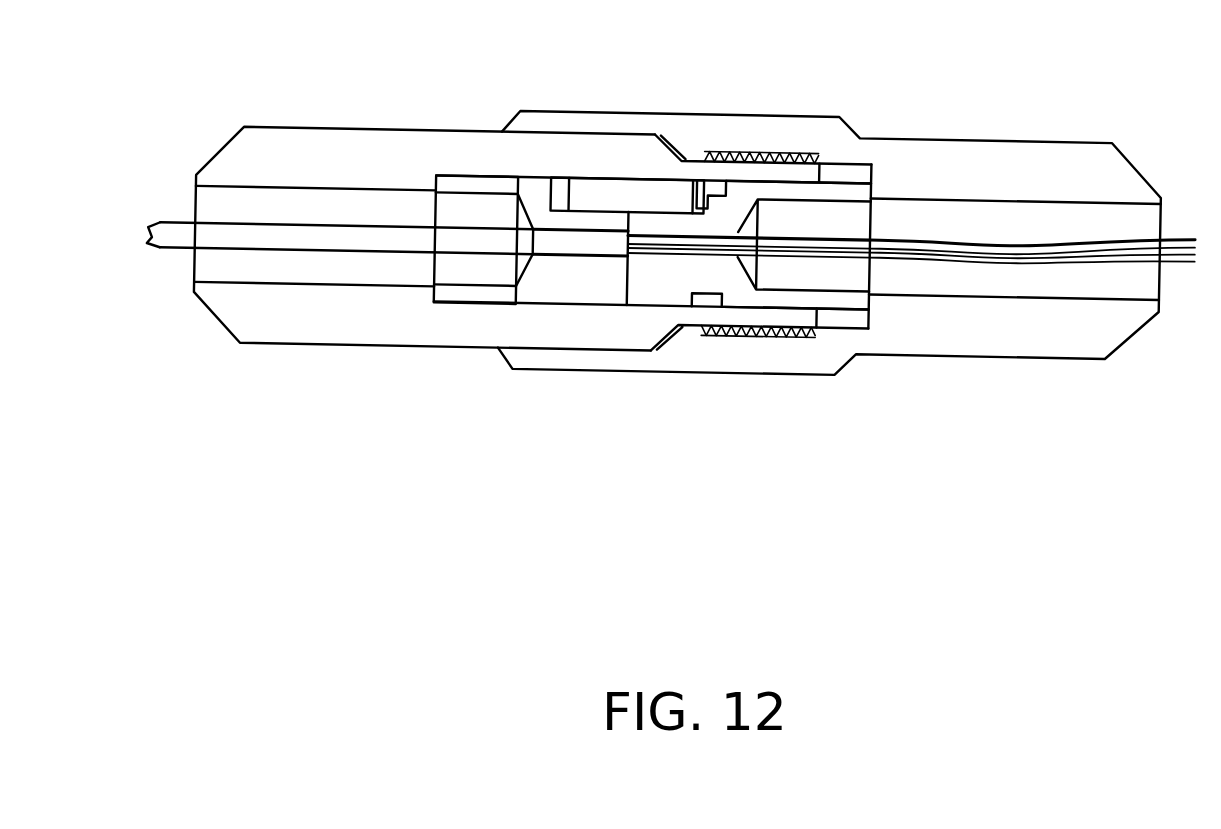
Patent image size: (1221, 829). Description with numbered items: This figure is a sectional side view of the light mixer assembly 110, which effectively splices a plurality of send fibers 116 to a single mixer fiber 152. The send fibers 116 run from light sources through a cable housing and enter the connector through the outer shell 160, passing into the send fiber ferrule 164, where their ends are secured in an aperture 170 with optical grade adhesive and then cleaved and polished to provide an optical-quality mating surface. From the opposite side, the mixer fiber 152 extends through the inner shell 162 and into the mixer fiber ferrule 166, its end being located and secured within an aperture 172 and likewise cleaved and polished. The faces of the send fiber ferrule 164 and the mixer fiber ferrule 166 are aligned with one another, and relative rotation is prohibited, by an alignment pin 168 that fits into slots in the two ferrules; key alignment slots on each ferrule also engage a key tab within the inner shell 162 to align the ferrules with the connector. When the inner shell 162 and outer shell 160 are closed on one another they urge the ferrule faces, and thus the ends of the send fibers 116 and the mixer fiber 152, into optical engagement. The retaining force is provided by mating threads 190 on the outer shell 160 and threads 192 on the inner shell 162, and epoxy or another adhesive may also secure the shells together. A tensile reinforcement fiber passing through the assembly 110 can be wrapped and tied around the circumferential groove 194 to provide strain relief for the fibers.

The light mixer assembly 110 is at (671, 285).
The send fibers 116 is at (1012, 415).
The mixer fiber 152 is at (307, 240).
The outer shell 160 is at (805, 382).
The inner shell 162 is at (305, 128).
The send fiber ferrule 164 is at (747, 197).
The mixer fiber ferrule 166 is at (532, 194).
The alignment pin 168 is at (594, 190).
The aperture 170 is at (650, 255).
The aperture 172 is at (553, 258).
The threads 190 is at (762, 152).
The threads 192 is at (732, 325).
The circumferential groove 194 is at (712, 190).